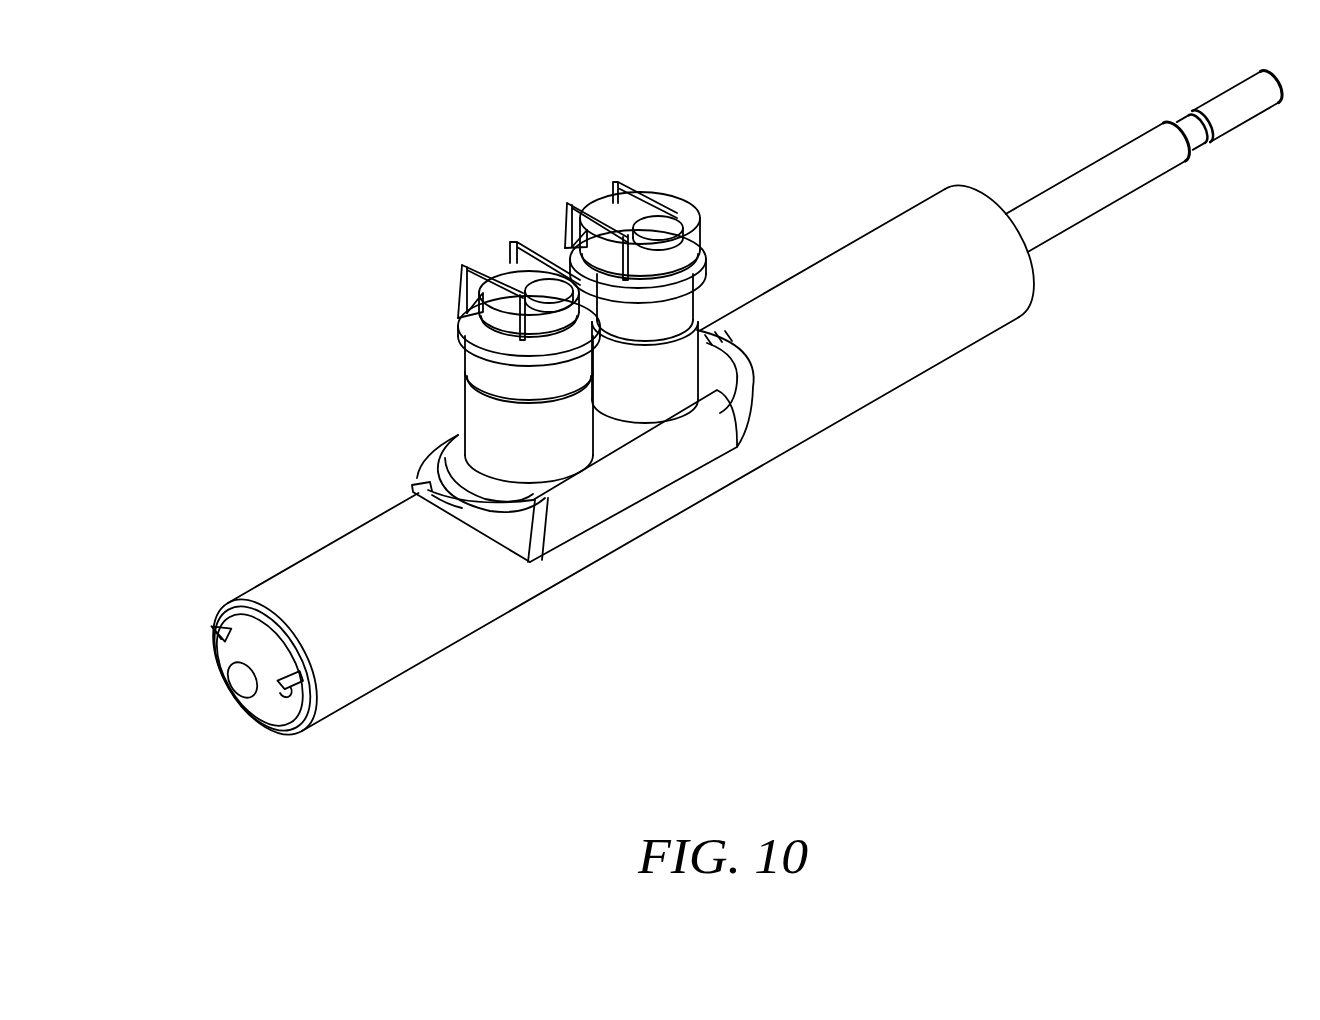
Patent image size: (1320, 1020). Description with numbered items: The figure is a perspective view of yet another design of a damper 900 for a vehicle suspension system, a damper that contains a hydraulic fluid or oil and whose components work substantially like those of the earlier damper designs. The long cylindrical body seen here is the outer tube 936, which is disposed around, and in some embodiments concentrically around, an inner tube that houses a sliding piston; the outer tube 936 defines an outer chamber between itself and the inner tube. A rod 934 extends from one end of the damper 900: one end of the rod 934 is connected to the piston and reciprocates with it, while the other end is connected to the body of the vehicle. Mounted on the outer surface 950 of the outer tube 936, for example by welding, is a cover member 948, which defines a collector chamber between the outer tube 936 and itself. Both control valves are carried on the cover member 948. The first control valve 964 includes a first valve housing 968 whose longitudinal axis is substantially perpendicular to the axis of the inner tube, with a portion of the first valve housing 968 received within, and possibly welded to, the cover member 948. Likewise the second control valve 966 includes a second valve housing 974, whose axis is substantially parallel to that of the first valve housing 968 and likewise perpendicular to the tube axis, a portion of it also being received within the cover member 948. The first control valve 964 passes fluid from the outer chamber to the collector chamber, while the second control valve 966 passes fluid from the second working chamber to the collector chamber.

The damper 900 is at (226, 197).
The rod 934 is at (1085, 183).
The outer tube 936 is at (827, 288).
The cover member 948 is at (430, 447).
The outer surface 950 is at (815, 385).
The first control valve 964 is at (592, 183).
The second control valve 966 is at (478, 240).
The first valve housing 968 is at (660, 380).
The second valve housing 974 is at (482, 410).